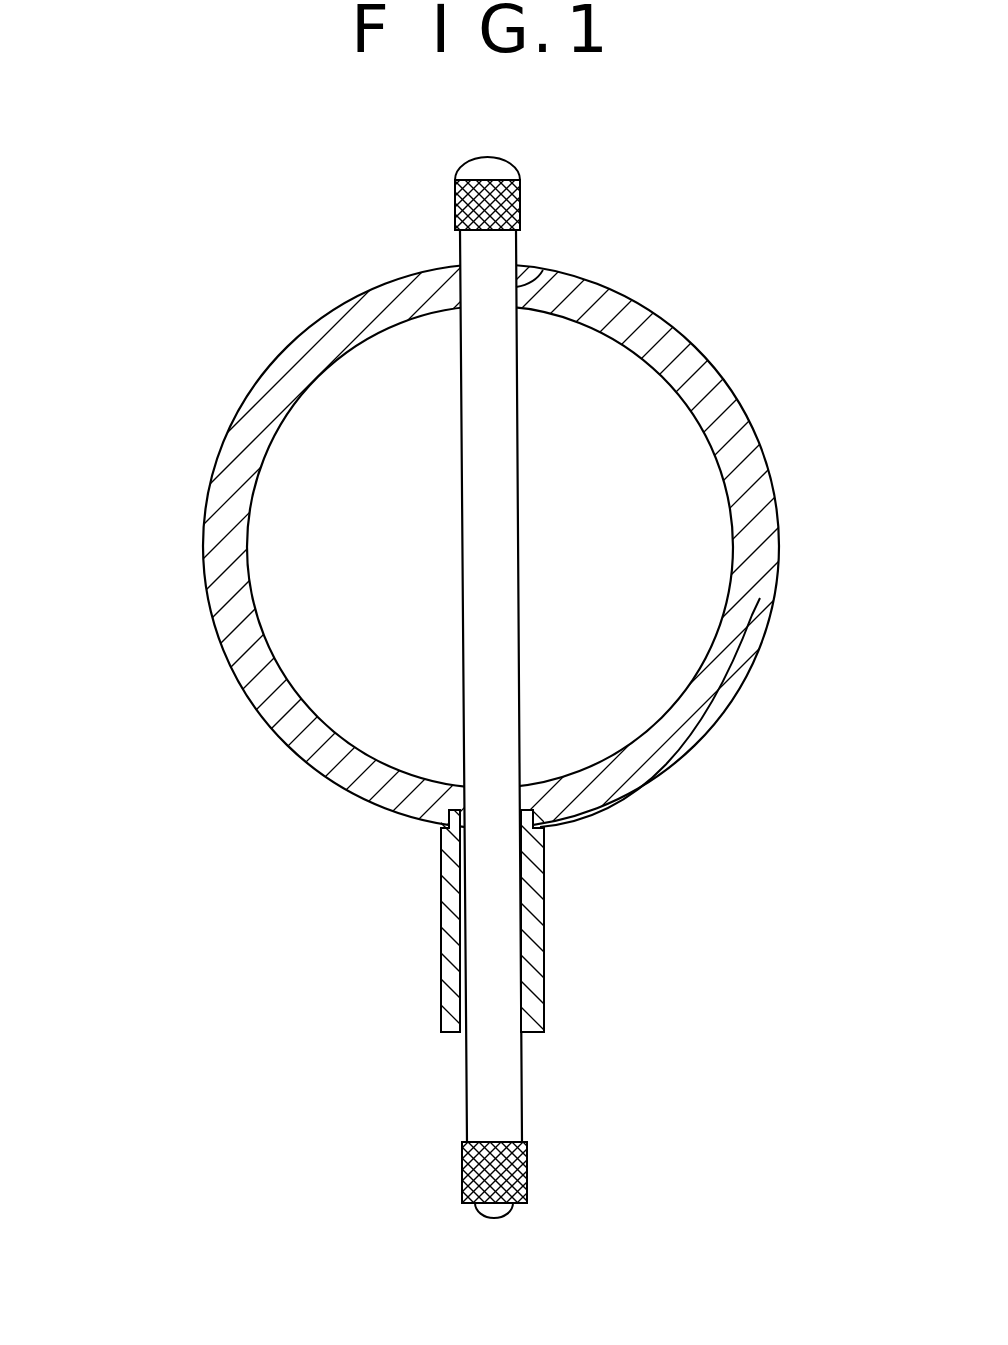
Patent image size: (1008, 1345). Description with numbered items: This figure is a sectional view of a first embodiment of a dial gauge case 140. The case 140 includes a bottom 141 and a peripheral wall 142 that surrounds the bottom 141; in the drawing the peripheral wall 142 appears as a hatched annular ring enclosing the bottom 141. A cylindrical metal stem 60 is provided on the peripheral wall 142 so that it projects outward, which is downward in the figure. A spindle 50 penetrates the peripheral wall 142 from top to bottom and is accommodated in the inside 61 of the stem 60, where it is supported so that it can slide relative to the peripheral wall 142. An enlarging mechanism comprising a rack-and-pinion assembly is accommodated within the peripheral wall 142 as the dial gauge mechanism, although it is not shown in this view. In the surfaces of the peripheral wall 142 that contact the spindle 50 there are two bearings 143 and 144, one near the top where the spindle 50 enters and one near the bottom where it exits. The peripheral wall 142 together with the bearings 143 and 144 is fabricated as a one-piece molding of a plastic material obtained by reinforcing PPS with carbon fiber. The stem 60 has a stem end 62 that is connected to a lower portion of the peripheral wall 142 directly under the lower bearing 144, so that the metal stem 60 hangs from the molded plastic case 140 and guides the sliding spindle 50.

The case 140 is at (243, 437).
The bottom 141 is at (372, 378).
The peripheral wall 142 is at (763, 510).
The bearing 143 is at (543, 270).
The bearing 144 is at (533, 797).
The spindle 50 is at (500, 440).
The stem 60 is at (533, 935).
The inside of the stem 61 is at (463, 953).
The stem end 62 is at (440, 815).